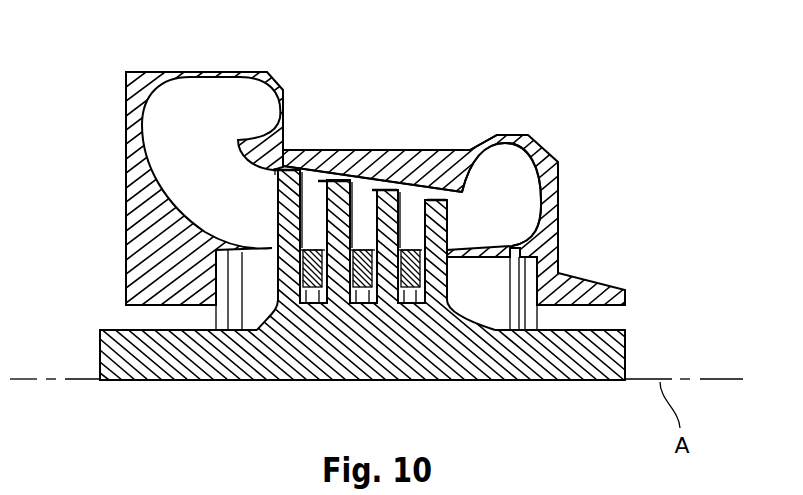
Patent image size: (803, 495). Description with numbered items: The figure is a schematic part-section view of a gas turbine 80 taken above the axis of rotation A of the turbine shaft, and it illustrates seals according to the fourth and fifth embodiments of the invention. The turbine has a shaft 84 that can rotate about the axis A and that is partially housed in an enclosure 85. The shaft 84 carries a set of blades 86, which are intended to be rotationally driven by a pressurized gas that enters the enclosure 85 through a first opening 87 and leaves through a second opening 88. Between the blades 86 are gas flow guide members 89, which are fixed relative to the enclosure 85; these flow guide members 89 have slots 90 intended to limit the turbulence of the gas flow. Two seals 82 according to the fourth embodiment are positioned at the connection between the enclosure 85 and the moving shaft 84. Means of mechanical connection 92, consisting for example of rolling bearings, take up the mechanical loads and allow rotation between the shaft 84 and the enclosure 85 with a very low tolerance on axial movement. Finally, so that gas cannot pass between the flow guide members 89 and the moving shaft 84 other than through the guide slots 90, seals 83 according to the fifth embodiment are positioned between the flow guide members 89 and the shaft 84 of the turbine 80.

The turbine 80 is at (522, 122).
The seals 82 is at (235, 317).
The seals 83 is at (320, 300).
The shaft 84 is at (627, 355).
The enclosure 85 is at (560, 178).
The blades 86 is at (300, 235).
The first opening 87 is at (207, 90).
The second opening 88 is at (523, 203).
The gas flow guide members 89 is at (345, 300).
The slots 90 is at (315, 250).
The means of mechanical connection 92 is at (173, 315).